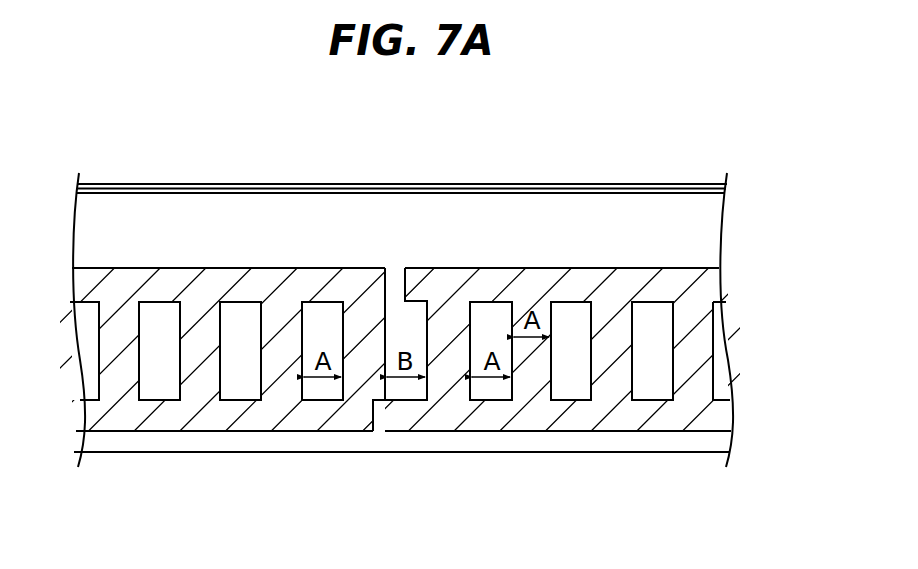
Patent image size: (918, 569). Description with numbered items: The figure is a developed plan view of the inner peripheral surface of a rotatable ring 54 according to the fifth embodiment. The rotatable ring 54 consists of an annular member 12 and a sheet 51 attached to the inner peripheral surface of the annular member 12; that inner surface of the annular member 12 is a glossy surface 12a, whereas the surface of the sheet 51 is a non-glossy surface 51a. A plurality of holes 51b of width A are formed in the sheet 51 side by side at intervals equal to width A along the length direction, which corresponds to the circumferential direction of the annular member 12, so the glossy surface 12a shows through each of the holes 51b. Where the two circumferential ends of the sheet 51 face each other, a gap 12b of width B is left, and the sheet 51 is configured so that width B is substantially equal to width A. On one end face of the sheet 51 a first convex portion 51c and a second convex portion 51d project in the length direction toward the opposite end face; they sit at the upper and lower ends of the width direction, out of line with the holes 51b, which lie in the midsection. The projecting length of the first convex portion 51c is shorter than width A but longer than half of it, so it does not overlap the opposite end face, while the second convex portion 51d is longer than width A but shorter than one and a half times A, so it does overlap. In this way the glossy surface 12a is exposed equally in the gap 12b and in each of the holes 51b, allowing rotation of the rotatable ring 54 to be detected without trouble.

The rotatable ring 54 is at (402, 139).
The annular member 12 is at (626, 209).
The glossy surface 12a is at (160, 382).
The gap 12b is at (385, 263).
The sheet 51 is at (535, 268).
The non-glossy surface 51a is at (282, 387).
The holes 51b is at (220, 388).
The first convex portion 51c is at (421, 289).
The second convex portion 51d is at (405, 413).